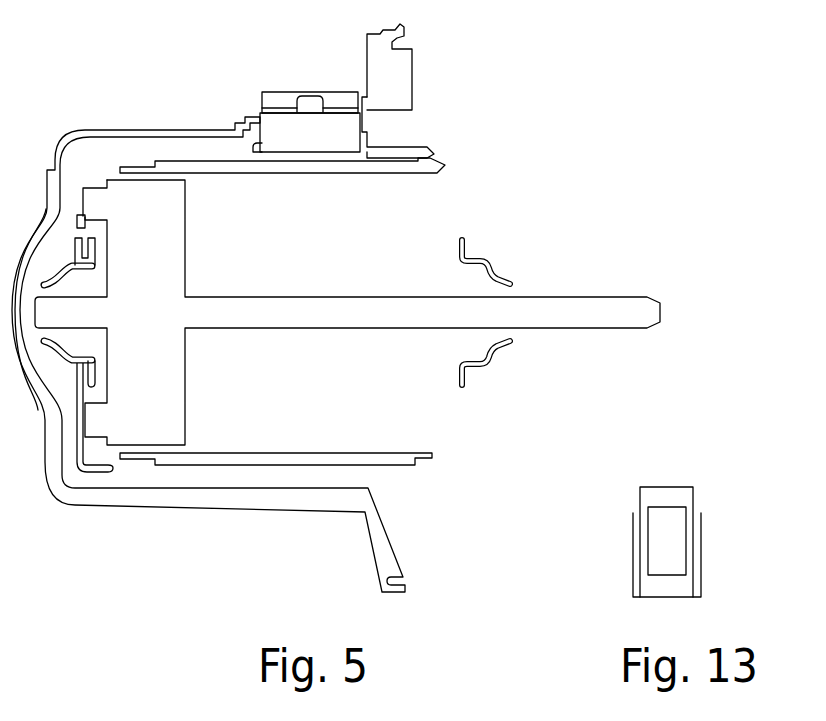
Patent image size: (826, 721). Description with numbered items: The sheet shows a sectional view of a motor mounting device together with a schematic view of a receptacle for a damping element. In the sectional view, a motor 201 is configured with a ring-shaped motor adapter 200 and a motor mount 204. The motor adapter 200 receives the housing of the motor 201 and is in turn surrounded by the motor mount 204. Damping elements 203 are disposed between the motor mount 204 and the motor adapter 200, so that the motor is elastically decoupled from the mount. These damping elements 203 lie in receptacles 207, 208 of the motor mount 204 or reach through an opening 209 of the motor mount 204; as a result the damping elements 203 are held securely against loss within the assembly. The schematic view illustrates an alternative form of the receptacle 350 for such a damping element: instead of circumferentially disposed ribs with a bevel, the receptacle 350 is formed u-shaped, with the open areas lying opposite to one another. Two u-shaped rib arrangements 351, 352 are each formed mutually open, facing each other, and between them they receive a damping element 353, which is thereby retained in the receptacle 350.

In FIG. 5, the motor adapter 200 is at (368, 163).
In FIG. 5, the motor 201 is at (146, 420).
In FIG. 5, the damping element 203 is at (342, 143).
In FIG. 5, the motor mount 204 is at (125, 130).
In FIG. 5, the receptacle 207 is at (260, 110).
In FIG. 5, the receptacle 208 is at (278, 152).
In FIG. 5, the opening 209 is at (366, 98).
In FIG. 13, the receptacle 350 is at (708, 577).
In FIG. 13, the u-shaped rib arrangement 351 is at (632, 583).
In FIG. 13, the u-shaped rib arrangement 352 is at (693, 497).
In FIG. 13, the damping element 353 is at (672, 538).